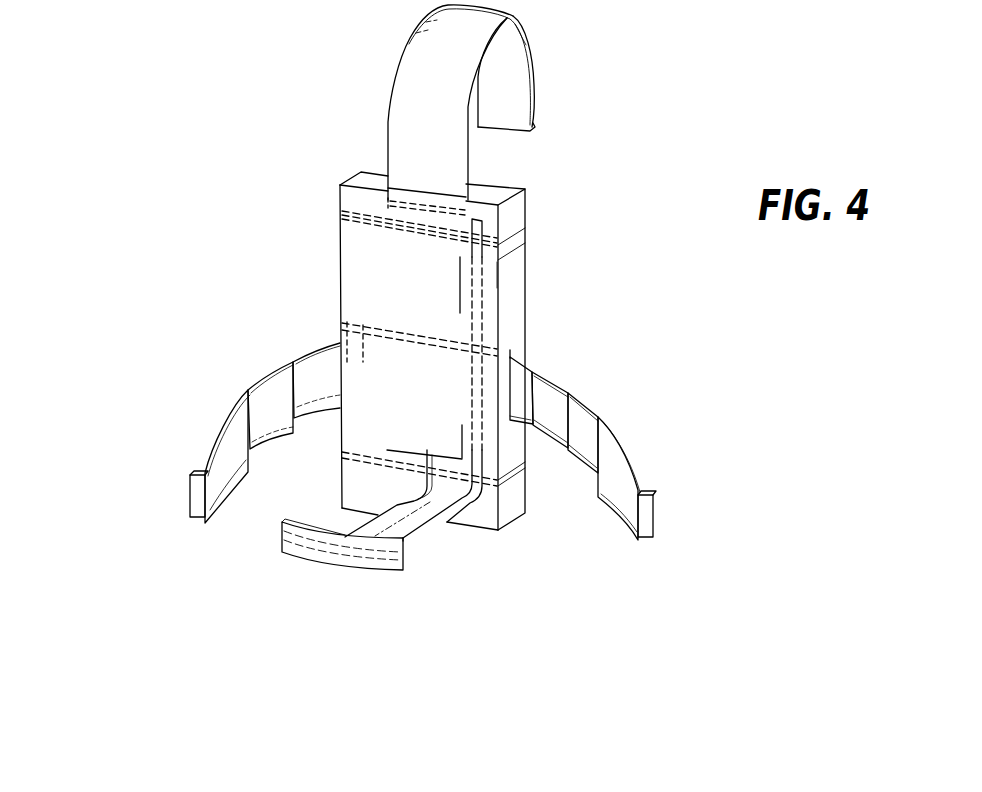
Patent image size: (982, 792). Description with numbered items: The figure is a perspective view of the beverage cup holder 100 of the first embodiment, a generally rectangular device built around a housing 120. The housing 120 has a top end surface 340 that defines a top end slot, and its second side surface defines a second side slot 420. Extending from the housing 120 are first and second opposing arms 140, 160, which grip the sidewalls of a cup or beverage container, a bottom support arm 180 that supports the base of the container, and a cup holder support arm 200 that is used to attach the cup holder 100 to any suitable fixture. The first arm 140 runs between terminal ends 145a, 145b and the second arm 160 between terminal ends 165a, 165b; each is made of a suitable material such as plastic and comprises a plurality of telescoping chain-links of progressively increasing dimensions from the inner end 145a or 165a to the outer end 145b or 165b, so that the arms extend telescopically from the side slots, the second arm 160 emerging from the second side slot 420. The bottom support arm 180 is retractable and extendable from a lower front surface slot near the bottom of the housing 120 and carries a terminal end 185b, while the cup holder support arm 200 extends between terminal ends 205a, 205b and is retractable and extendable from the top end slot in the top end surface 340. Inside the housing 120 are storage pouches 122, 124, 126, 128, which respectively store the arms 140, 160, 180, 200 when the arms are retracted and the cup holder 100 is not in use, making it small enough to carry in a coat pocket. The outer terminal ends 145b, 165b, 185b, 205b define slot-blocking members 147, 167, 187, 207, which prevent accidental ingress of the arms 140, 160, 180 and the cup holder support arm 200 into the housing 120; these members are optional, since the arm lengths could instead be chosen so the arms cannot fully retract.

The beverage cup holder 100 is at (577, 527).
The housing 120 is at (442, 300).
The storage pouch 122 is at (362, 362).
The storage pouch 124 is at (508, 365).
The storage pouch 126 is at (455, 493).
The storage pouch 128 is at (408, 252).
The first opposing arm 140 is at (230, 398).
The terminal end of first arm 145a is at (328, 348).
The terminal end of first arm 145b is at (212, 466).
The slot-blocking member 147 is at (197, 500).
The second opposing arm 160 is at (613, 422).
The terminal end of second arm 165a is at (537, 374).
The terminal end of second arm 165b is at (630, 483).
The slot-blocking member 167 is at (652, 518).
The bottom support arm 180 is at (413, 540).
The terminal end of bottom support arm 185b is at (340, 530).
The slot-blocking member 187 is at (316, 553).
The cup holder support arm 200 is at (444, 119).
The terminal end of cup holder support arm 205a is at (423, 173).
The terminal end of cup holder support arm 205b is at (533, 120).
The slot-blocking member 207 is at (533, 128).
The top end surface 340 is at (490, 200).
The second side slot 420 is at (513, 357).